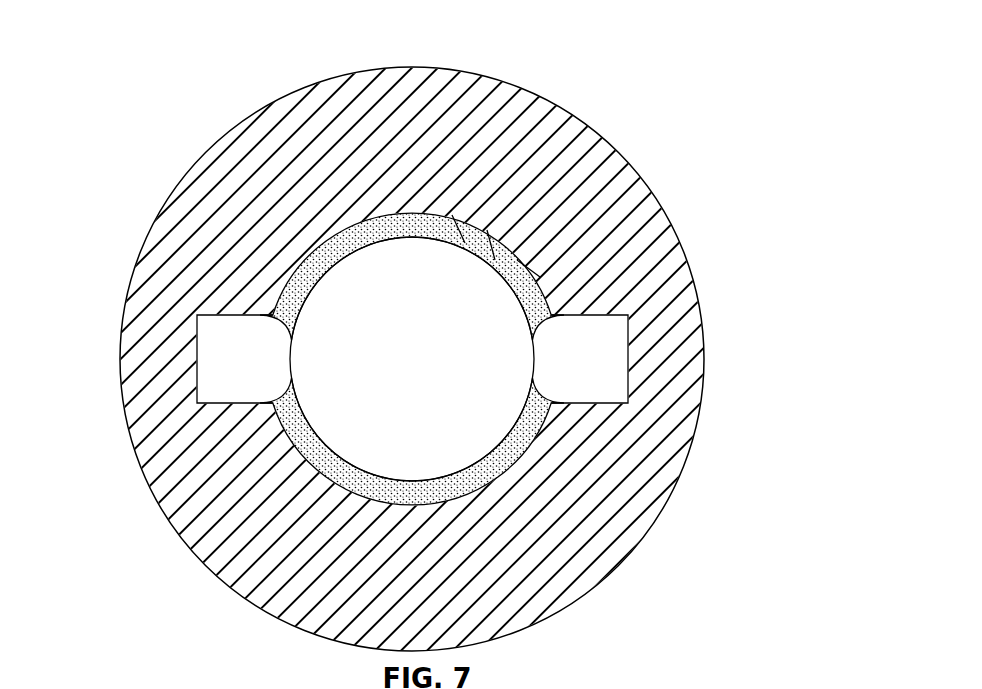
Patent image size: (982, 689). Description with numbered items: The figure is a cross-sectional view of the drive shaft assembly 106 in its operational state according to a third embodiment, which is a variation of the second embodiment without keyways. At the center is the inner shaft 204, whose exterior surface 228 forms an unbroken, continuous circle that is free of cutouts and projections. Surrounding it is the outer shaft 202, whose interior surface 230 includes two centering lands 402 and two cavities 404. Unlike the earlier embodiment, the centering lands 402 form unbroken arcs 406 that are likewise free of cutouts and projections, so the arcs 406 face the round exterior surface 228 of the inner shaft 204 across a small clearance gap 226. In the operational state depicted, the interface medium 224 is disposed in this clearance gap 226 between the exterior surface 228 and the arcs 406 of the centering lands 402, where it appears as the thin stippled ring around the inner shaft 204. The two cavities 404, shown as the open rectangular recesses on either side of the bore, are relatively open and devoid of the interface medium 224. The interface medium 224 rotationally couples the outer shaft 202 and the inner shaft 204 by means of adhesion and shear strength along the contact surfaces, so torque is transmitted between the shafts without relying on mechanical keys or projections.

The drive shaft assembly 106 is at (181, 75).
The outer shaft 202 is at (185, 235).
The inner shaft 204 is at (367, 293).
The interface medium 224 is at (452, 215).
The clearance gap 226 is at (397, 212).
The exterior surface 228 is at (490, 230).
The interior surface 230 is at (295, 278).
The centering lands 402 is at (267, 298).
The cavities 404 is at (595, 313).
The arcs 406 is at (540, 272).